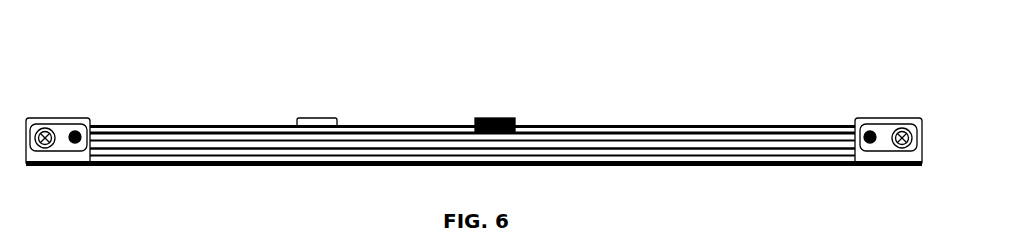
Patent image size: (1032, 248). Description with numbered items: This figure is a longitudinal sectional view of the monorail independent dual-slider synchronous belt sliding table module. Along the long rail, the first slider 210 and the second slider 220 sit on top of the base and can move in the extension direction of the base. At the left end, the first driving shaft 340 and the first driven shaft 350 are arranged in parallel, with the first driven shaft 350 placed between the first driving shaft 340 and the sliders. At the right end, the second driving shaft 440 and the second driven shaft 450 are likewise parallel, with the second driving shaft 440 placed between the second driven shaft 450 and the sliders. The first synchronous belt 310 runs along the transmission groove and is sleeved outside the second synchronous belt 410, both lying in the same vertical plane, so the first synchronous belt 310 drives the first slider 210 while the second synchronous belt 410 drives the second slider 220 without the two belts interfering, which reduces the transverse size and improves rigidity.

The first slider 210 is at (303, 120).
The second slider 220 is at (505, 118).
The first synchronous belt 310 is at (117, 125).
The first driving shaft 340 is at (37, 118).
The first driven shaft 350 is at (68, 118).
The second synchronous belt 410 is at (200, 127).
The second driving shaft 440 is at (862, 125).
The second driven shaft 450 is at (907, 128).